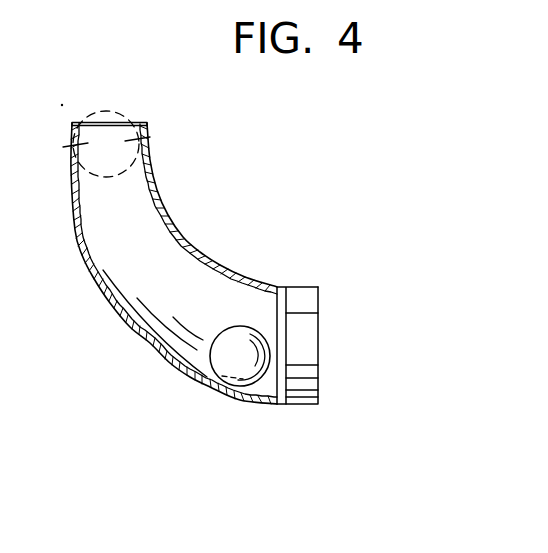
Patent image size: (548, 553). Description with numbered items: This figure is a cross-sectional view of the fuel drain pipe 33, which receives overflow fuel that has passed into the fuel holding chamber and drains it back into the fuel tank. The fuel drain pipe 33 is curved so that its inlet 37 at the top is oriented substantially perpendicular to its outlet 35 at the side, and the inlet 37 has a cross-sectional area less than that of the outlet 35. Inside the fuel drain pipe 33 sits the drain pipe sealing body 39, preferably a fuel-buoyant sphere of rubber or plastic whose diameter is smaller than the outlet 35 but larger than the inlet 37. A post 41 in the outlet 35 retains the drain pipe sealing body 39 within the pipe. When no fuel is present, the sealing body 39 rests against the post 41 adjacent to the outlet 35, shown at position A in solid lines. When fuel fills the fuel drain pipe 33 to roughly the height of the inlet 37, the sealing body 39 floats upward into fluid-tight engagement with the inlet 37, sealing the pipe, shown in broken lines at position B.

The fuel drain pipe 33 is at (170, 268).
The inlet 37 is at (138, 122).
The drain pipe sealing body 39 is at (148, 138).
The post 41 is at (318, 313).
The outlet 35 is at (318, 375).
The rest position of sealing body A is at (223, 353).
The sealing position of sealing body B is at (72, 148).